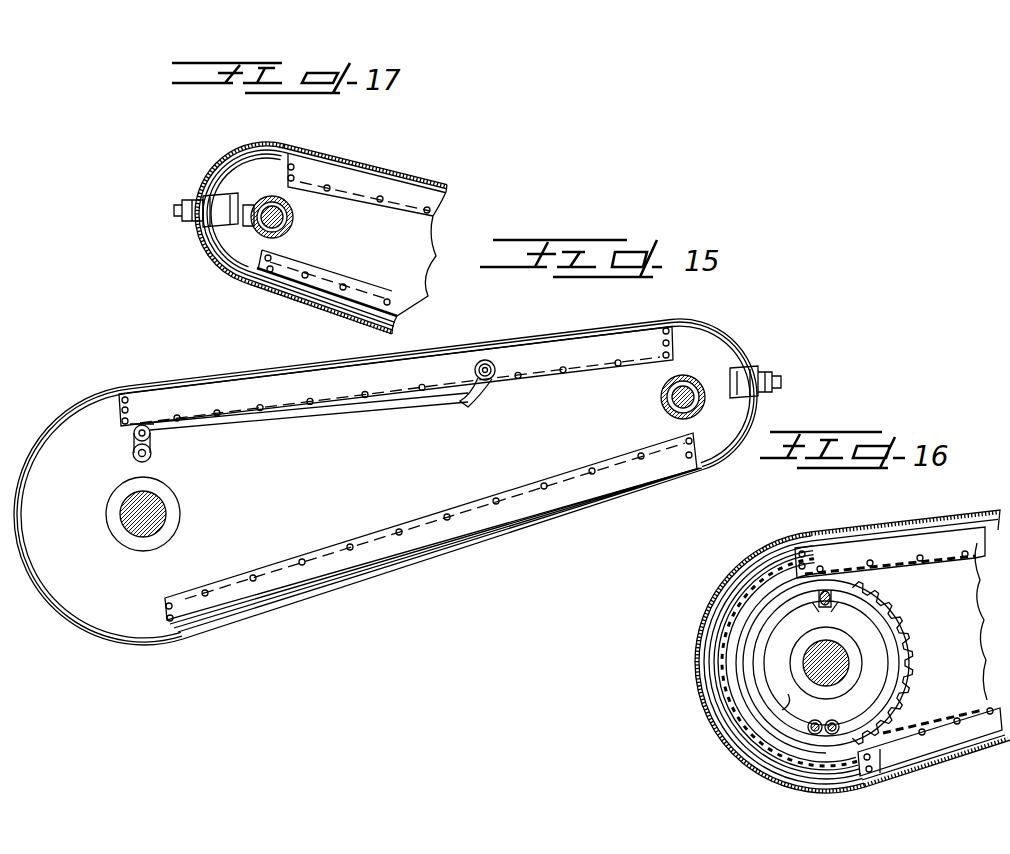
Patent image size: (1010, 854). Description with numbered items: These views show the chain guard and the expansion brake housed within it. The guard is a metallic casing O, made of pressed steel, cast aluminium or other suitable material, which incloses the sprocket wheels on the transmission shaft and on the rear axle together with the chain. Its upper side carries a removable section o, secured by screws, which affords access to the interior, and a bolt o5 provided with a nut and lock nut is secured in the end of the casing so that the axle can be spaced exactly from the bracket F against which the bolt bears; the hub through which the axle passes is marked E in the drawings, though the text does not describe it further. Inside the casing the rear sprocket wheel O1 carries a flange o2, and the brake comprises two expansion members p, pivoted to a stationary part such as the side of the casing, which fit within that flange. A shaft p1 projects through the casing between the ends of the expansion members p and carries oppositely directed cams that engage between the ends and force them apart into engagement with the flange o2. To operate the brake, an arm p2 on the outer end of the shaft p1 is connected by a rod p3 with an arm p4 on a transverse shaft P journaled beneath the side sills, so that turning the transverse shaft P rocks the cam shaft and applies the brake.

In FIG. 15, the metallic casing O is at (148, 582).
In FIG. 16, the metallic casing O is at (968, 611).
In FIG. 17, the metallic casing O is at (405, 250).
In FIG. 15, the rear sprocket wheel O1 is at (311, 580).
In FIG. 16, the rear sprocket wheel O1 is at (772, 654).
In FIG. 17, the rear sprocket wheel O1 is at (345, 234).
In FIG. 15, the removable section o is at (197, 398).
In FIG. 16, the flange o2 is at (893, 658).
In FIG. 17, the bolt o5 is at (181, 208).
In FIG. 16, the expansion member p is at (888, 688).
In FIG. 16, the shaft p1 is at (838, 613).
In FIG. 15, the arm p2 is at (138, 428).
In FIG. 15, the rod p3 is at (290, 420).
In FIG. 15, the arm p4 is at (480, 395).
In FIG. 15, the transverse shaft P is at (490, 362).
In FIG. 15, the axle hub E is at (662, 407).
In FIG. 17, the axle hub E is at (255, 232).
In FIG. 15, the bracket F is at (693, 383).
In FIG. 17, the bracket F is at (263, 197).